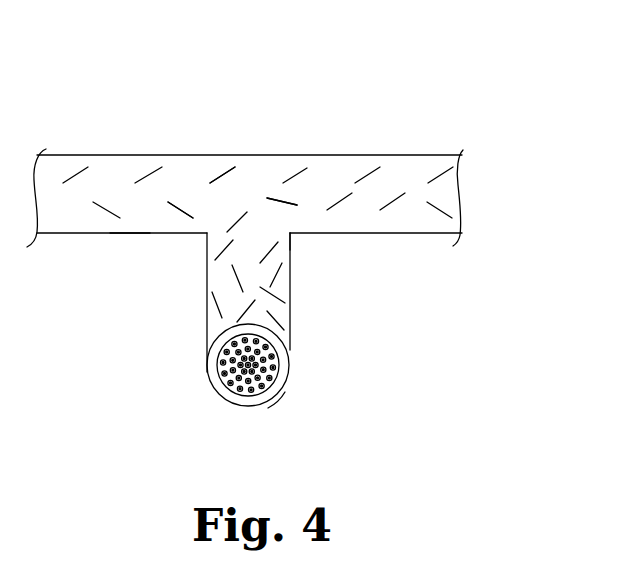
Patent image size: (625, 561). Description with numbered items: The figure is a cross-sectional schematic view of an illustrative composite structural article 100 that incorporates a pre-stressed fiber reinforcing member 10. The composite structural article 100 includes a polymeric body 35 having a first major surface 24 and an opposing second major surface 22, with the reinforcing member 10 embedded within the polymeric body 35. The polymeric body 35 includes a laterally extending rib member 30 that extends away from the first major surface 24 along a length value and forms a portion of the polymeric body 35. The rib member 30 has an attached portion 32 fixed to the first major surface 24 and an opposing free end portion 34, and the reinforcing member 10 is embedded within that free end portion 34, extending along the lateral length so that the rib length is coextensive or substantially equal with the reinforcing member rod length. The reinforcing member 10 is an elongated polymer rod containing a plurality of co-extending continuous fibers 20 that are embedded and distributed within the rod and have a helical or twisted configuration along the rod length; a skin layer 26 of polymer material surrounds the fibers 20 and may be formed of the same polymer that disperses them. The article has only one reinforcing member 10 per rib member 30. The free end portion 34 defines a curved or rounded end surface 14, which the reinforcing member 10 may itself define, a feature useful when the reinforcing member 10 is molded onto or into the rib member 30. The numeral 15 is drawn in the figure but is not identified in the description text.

The composite structural article 100 is at (245, 248).
The second major surface 22 is at (80, 155).
The polymeric body 35 is at (196, 170).
The fiber reinforcement 15 is at (279, 198).
The first major surface 24 is at (128, 233).
The attached portion 32 is at (292, 235).
The rib member 30 is at (297, 292).
The co-extending continuous fibers 20 is at (283, 355).
The pre-stressed fiber reinforcing member 10 is at (233, 400).
The skin layer 26 is at (222, 393).
The curved or rounded end surface 14 is at (248, 403).
The free end portion 34 is at (268, 408).